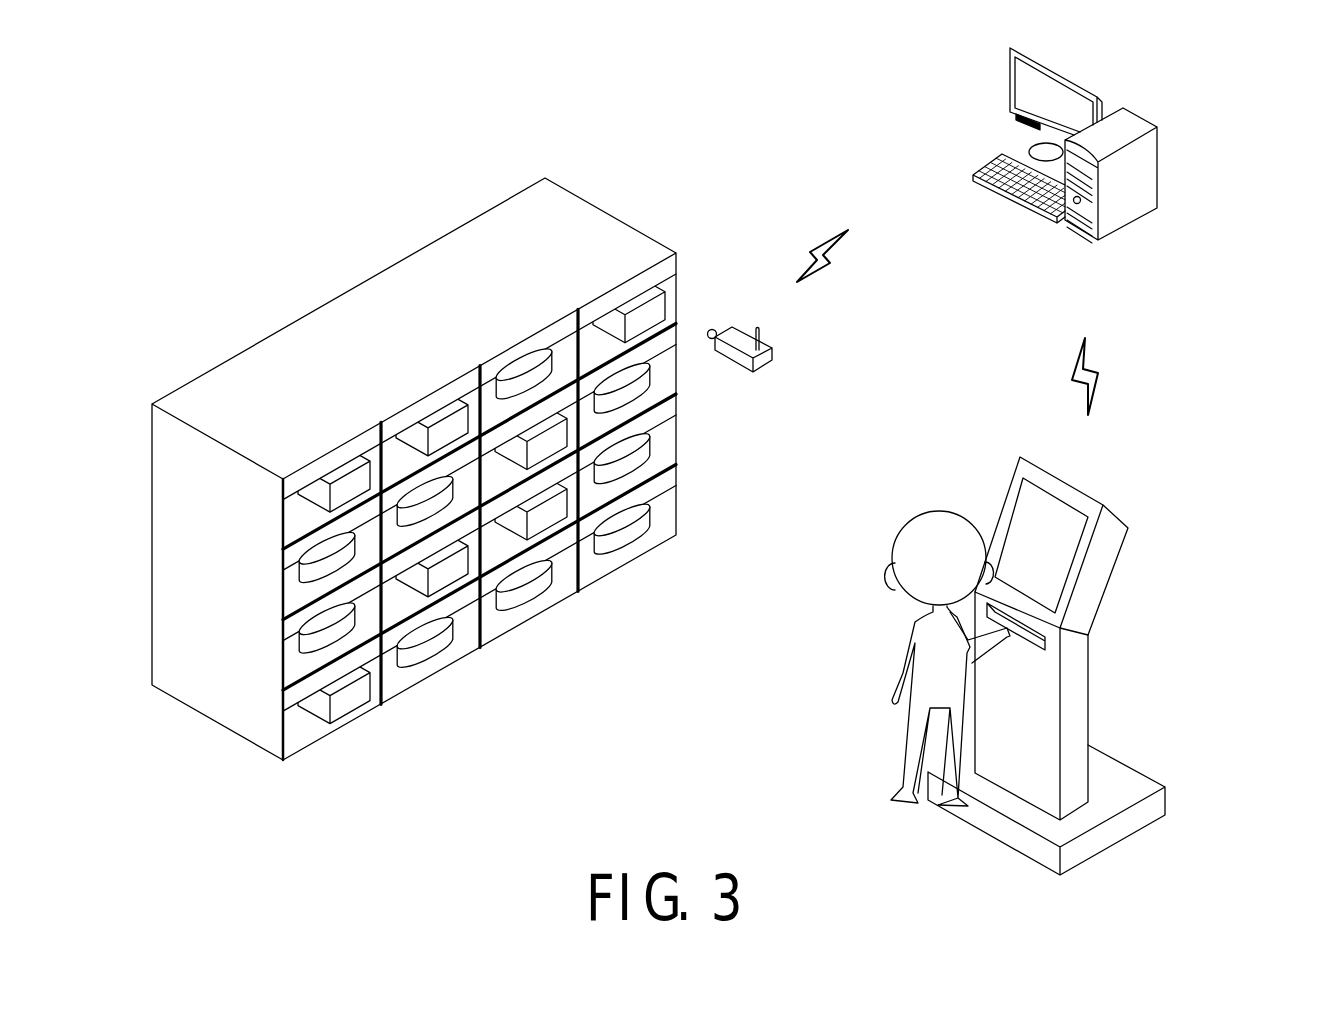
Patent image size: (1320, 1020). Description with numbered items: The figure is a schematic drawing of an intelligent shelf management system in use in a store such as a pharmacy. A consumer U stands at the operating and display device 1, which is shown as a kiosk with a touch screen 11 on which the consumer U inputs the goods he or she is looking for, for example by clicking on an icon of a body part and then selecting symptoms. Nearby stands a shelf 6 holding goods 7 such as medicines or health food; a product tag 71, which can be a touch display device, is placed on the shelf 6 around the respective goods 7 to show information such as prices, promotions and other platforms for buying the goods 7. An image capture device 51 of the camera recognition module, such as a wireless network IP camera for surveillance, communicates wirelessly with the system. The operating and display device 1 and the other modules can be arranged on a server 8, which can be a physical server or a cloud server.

The operating and display device 1 is at (1106, 640).
The touch screen 11 is at (1053, 565).
The shelf 6 is at (533, 396).
The goods 7 is at (639, 318).
The product tag 71 is at (655, 485).
The image capture device 51 is at (741, 338).
The server 8 is at (1088, 77).
The consumer U is at (935, 650).